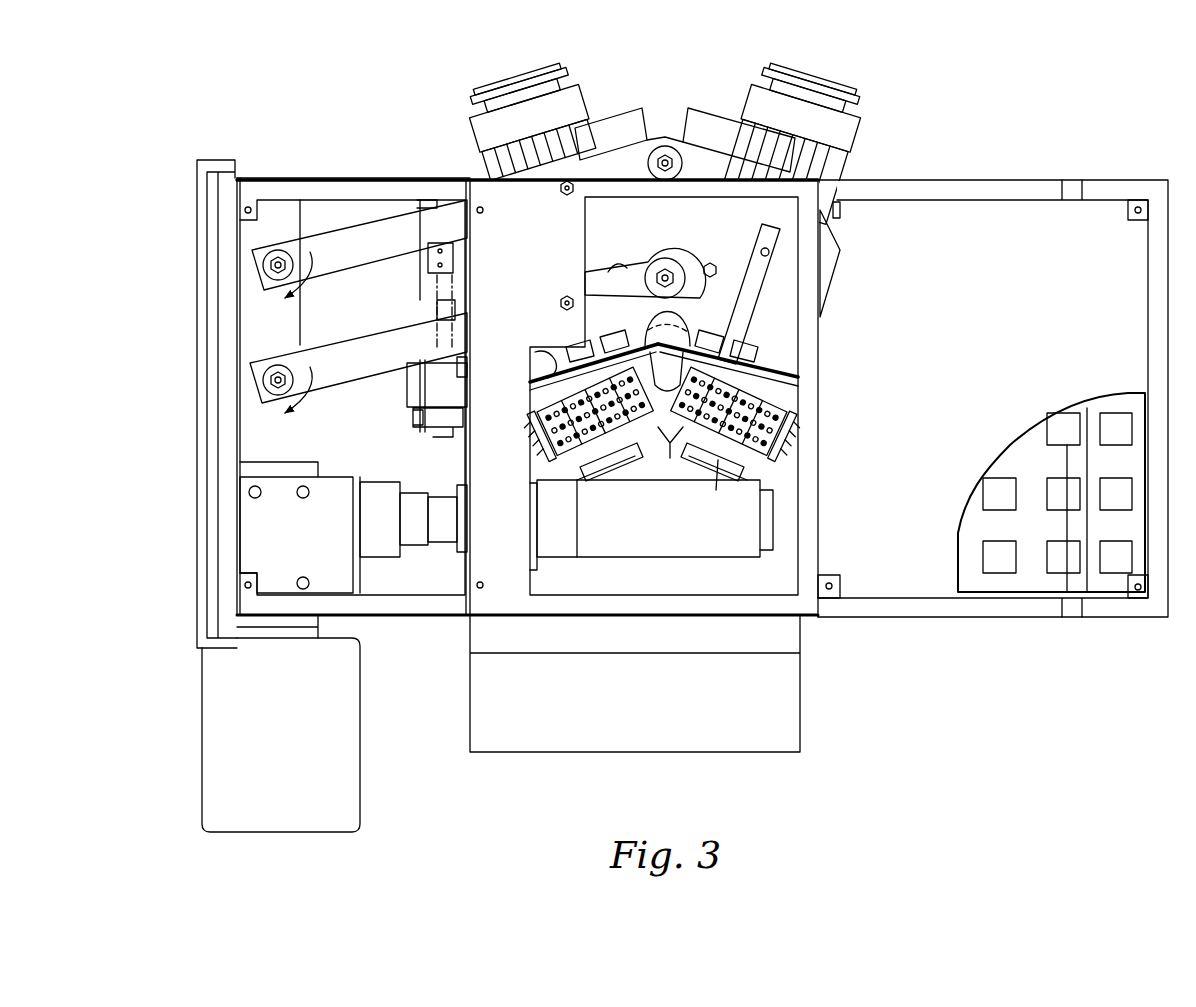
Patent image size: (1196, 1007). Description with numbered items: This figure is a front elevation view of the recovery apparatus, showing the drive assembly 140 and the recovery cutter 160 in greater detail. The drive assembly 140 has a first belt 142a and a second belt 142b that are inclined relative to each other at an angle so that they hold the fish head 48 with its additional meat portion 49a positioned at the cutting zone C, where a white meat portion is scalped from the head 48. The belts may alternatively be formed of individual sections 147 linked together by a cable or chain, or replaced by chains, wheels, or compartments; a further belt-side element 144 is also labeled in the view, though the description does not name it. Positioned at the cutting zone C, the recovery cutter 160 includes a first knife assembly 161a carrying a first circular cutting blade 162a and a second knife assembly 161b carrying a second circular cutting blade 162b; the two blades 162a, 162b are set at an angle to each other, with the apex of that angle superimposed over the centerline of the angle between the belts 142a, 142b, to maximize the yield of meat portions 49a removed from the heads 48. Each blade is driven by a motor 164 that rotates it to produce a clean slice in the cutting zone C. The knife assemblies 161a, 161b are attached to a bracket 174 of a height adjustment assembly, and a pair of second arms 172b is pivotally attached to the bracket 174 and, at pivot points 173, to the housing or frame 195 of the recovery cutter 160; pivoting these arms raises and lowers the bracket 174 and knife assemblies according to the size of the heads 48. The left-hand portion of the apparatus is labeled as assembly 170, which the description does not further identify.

The first knife assembly 161a is at (610, 72).
The second knife assembly 161b is at (888, 90).
The motor 164 is at (480, 124).
The housing or frame 195 is at (338, 185).
The recovery cutter 160 is at (907, 230).
The feed mechanism 170 is at (252, 240).
The bracket 174 is at (278, 265).
The second arms 172b is at (353, 253).
The pivot points 173 is at (562, 191).
The additional meat portion 49a is at (650, 322).
The fish head 48 is at (703, 330).
The cutting zone C is at (707, 332).
The first circular cutting blade 162a is at (548, 357).
The second circular cutting blade 162b is at (782, 373).
The guide rail 144 is at (537, 447).
The first belt 142a is at (637, 453).
The second belt 142b is at (757, 483).
The individual sections 147 is at (718, 460).
The drive assembly 140 is at (688, 482).